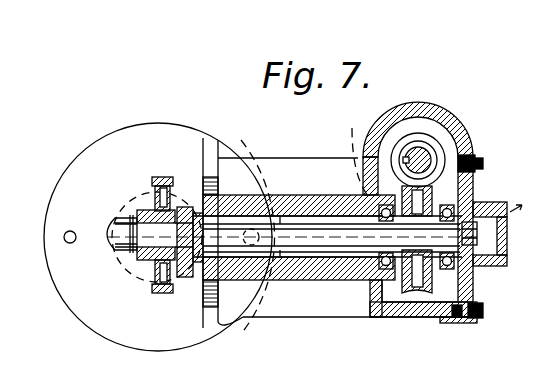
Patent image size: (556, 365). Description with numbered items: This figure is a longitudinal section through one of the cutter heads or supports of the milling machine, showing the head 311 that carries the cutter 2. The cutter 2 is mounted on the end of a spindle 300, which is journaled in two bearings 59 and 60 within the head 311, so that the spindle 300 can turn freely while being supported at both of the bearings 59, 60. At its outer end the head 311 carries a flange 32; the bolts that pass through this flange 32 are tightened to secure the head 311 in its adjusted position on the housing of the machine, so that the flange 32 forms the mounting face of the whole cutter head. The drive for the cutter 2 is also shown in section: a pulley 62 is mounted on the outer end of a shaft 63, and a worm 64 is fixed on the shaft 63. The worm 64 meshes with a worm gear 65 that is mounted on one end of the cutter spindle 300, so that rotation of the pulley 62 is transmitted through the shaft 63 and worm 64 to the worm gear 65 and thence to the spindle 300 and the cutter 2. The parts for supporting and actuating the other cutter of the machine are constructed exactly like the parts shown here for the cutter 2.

The cutter 2 is at (162, 294).
The flange 32 is at (92, 311).
The bearing 59 is at (238, 281).
The bearing 60 is at (372, 282).
The pulley 62 is at (447, 114).
The shaft 63 is at (430, 156).
The worm 64 is at (441, 165).
The worm gear 65 is at (432, 288).
The spindle 300 is at (328, 232).
The head 311 is at (270, 281).